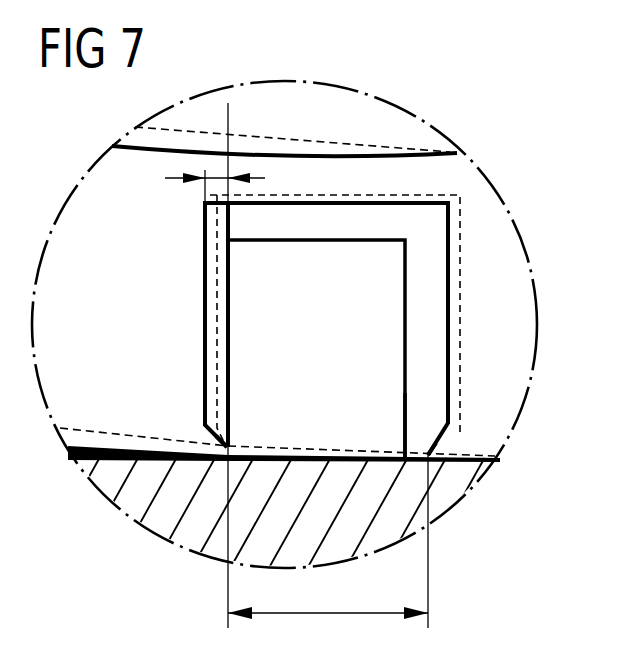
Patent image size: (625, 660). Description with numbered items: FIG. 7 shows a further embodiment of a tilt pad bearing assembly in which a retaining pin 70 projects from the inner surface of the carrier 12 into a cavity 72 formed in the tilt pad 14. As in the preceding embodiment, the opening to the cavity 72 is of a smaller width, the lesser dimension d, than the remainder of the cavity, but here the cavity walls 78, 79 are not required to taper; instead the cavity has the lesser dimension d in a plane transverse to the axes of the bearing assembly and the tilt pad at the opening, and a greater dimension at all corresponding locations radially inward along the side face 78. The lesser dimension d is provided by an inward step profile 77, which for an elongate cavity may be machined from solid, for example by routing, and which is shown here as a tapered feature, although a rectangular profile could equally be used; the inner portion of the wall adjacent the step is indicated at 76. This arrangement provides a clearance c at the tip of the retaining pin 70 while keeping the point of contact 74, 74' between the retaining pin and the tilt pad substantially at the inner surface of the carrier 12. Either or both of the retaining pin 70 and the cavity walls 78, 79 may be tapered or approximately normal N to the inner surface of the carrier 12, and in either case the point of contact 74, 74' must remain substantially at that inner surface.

The carrier 12 is at (448, 497).
The component outline 14 is at (513, 310).
The retaining pin 70 is at (348, 344).
The cavity 72 is at (440, 228).
The point of contact 74 is at (263, 438).
The point of contact 74' is at (262, 410).
The inner right wall 76 is at (405, 393).
The inward step profile 77 is at (420, 452).
The cavity wall 78 is at (203, 290).
The cavity wall 79 is at (450, 345).
The normal N is at (232, 128).
The clearance c is at (205, 187).
The lesser dimension d is at (328, 541).